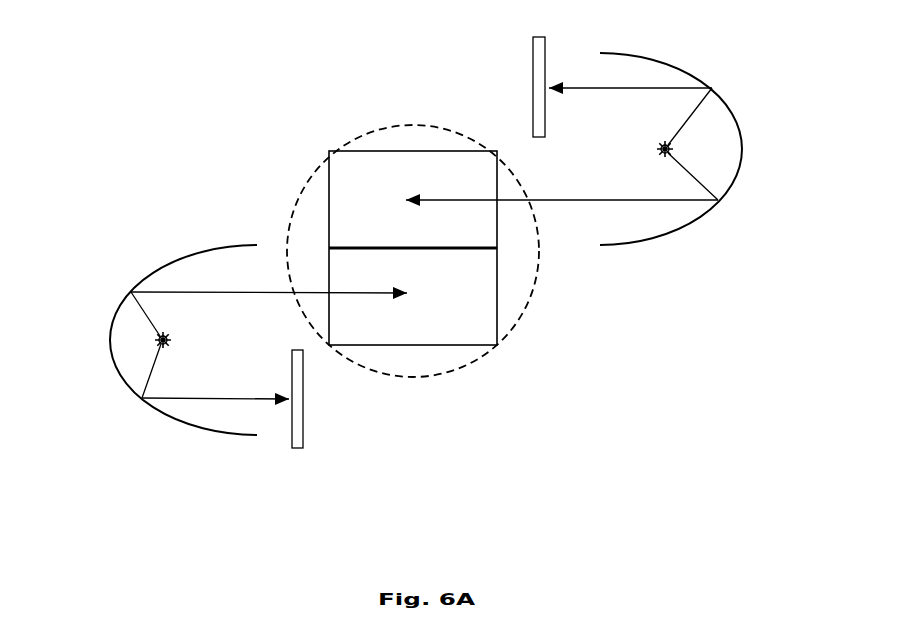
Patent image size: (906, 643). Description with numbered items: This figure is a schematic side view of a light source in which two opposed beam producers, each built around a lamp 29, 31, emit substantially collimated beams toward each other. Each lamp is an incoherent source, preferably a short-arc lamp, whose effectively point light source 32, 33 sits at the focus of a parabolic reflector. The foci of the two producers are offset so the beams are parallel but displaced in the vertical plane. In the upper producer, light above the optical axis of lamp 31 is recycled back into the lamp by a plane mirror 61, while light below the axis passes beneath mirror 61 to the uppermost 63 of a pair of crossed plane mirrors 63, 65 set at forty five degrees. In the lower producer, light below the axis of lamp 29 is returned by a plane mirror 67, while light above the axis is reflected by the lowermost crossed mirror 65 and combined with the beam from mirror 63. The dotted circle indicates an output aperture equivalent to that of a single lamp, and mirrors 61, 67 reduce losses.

The lamp 29 is at (108, 338).
The lamp 31 is at (722, 88).
The point light source 32 is at (170, 323).
The point light source 33 is at (648, 153).
The plane mirror 61 is at (532, 67).
The uppermost crossed plane mirror 63 is at (317, 178).
The lowermost crossed plane mirror 65 is at (440, 348).
The plane mirror 67 is at (305, 422).